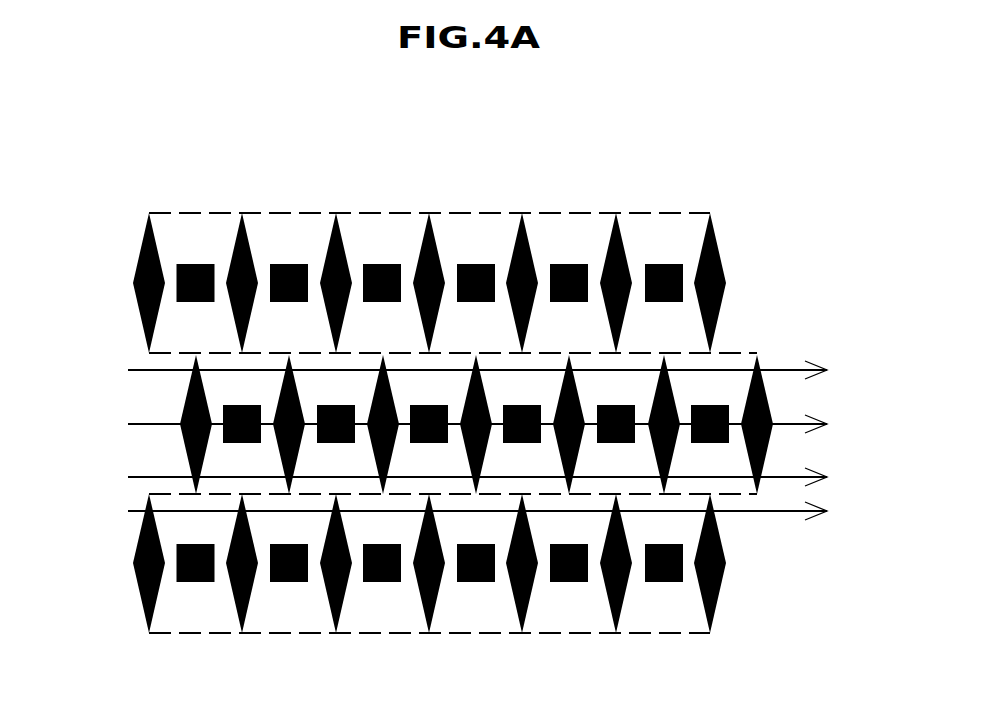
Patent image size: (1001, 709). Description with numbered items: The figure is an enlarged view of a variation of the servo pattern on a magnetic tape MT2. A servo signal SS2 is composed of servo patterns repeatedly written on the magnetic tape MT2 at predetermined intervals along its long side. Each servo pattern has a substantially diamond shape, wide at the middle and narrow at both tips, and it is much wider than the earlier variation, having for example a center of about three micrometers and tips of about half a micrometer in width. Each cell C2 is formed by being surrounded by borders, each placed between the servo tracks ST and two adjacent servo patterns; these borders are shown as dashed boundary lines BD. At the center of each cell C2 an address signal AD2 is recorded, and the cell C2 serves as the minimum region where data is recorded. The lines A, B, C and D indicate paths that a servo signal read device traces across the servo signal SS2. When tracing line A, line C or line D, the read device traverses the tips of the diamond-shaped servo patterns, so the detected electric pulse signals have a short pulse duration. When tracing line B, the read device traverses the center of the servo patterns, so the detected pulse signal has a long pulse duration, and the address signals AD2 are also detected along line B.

The band boundary BD is at (190, 212).
The cell C2 is at (371, 230).
The servo signal SS2 is at (630, 259).
The address signal AD2 is at (470, 263).
The magnetic tape MT2 is at (503, 153).
The servo tracks ST is at (108, 340).
The line A is at (486, 372).
The line B is at (486, 426).
The line C is at (486, 479).
The line D is at (486, 513).